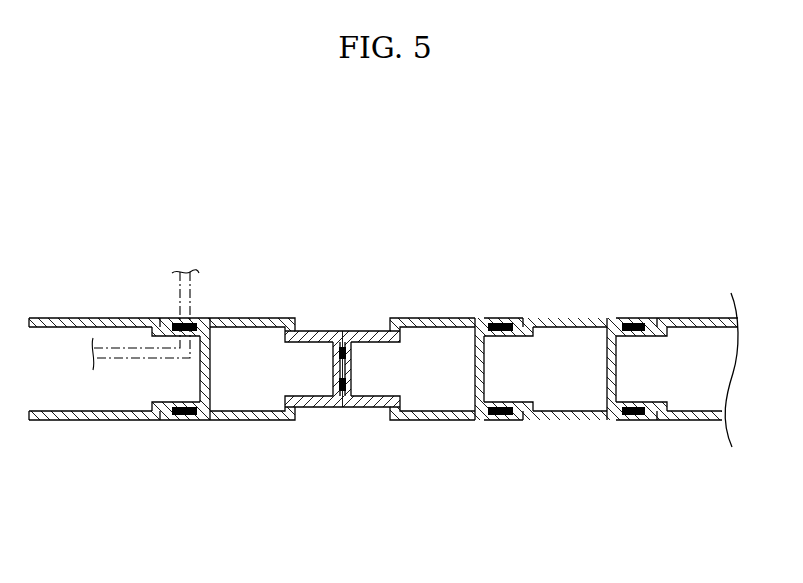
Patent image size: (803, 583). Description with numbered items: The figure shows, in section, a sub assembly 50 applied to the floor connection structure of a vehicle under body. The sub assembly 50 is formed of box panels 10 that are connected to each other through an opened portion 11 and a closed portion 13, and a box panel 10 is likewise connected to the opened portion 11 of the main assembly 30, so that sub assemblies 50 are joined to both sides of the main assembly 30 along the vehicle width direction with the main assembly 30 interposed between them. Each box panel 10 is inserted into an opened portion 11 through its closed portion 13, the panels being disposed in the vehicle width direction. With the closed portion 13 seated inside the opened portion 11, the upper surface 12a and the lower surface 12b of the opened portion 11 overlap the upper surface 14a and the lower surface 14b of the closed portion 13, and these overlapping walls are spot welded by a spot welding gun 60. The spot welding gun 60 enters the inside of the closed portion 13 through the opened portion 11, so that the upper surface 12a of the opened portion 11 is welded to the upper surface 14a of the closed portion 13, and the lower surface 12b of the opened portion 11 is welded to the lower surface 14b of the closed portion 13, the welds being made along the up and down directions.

The box panel 10 is at (165, 510).
The opened portion 11 is at (118, 422).
The closed portion 13 is at (165, 421).
The upper surface of the opened portion 12a is at (244, 318).
The lower surface of the opened portion 12b is at (250, 421).
The upper surface of the closed portion 14a is at (160, 318).
The lower surface of the closed portion 14b is at (199, 421).
The main assembly 30 is at (344, 423).
The sub assembly 50 is at (96, 431).
The spot welding gun 60 is at (188, 295).